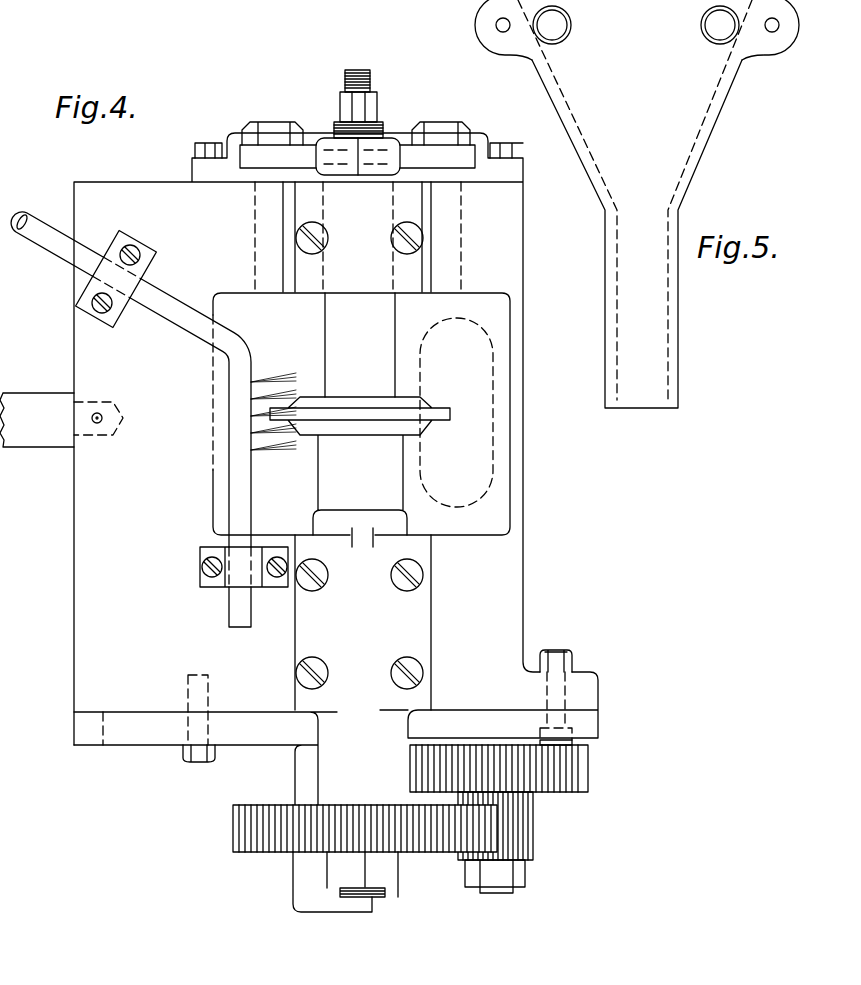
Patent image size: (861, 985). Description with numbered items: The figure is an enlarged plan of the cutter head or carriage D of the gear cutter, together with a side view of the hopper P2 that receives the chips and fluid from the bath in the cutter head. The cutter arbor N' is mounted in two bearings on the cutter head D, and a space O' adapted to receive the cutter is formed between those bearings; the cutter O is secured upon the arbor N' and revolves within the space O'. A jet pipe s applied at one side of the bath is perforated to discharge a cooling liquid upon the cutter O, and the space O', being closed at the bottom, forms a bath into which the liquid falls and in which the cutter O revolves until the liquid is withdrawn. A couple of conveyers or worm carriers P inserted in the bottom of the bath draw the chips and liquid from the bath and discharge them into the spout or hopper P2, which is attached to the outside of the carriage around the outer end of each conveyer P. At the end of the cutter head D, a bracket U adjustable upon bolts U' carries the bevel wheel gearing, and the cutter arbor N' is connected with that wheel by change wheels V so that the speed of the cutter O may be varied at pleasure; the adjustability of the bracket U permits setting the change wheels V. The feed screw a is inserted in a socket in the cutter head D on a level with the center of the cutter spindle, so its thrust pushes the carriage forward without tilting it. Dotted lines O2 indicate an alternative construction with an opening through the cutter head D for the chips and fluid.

In FIG. 4, the cutter head D is at (73, 565).
In FIG. 4, the space O' is at (361, 414).
In FIG. 4, the dotted lines O2 is at (487, 490).
In FIG. 4, the cutter arbor N' is at (377, 547).
In FIG. 4, the cutter O is at (370, 472).
In FIG. 4, the jet pipe s is at (228, 482).
In FIG. 4, the screw a is at (27, 392).
In FIG. 4, the bolts U' is at (159, 731).
In FIG. 4, the bracket U is at (589, 697).
In FIG. 4, the change wheels V is at (233, 833).
In FIG. 4, the spout or hopper P2 is at (403, 127).
In FIG. 5, the spout or hopper P2 is at (637, 204).
In FIG. 5, the conveyers or worm carriers P is at (571, 38).